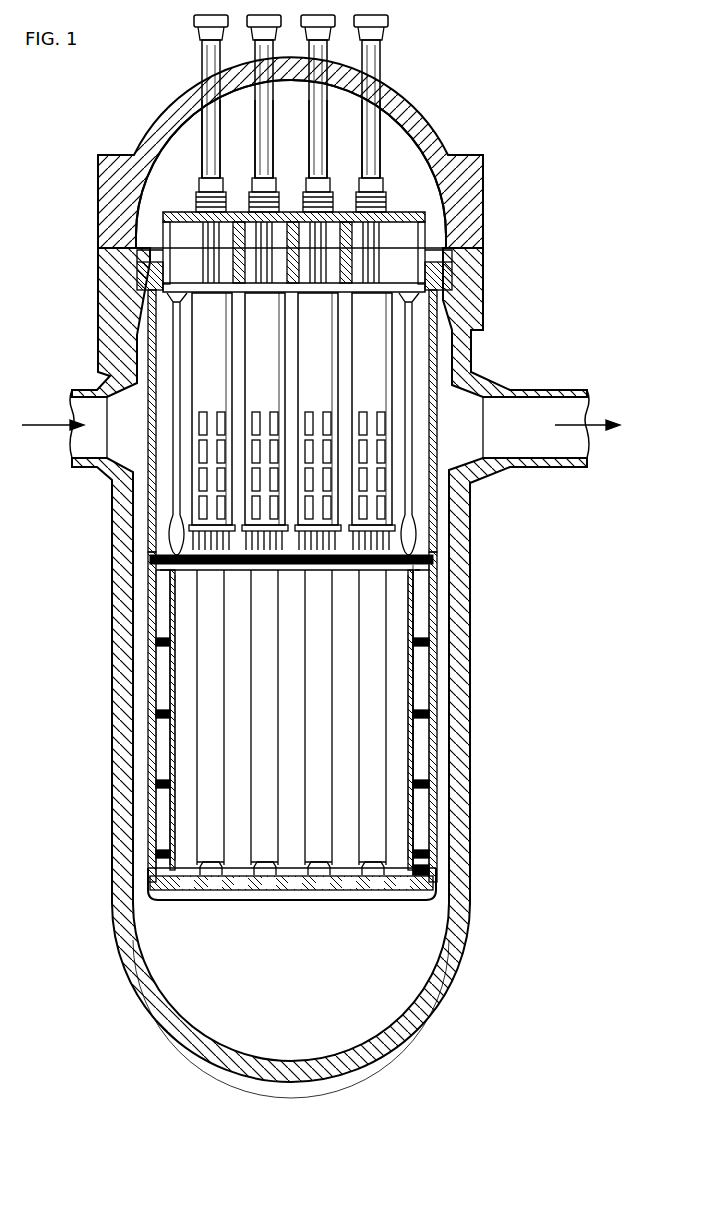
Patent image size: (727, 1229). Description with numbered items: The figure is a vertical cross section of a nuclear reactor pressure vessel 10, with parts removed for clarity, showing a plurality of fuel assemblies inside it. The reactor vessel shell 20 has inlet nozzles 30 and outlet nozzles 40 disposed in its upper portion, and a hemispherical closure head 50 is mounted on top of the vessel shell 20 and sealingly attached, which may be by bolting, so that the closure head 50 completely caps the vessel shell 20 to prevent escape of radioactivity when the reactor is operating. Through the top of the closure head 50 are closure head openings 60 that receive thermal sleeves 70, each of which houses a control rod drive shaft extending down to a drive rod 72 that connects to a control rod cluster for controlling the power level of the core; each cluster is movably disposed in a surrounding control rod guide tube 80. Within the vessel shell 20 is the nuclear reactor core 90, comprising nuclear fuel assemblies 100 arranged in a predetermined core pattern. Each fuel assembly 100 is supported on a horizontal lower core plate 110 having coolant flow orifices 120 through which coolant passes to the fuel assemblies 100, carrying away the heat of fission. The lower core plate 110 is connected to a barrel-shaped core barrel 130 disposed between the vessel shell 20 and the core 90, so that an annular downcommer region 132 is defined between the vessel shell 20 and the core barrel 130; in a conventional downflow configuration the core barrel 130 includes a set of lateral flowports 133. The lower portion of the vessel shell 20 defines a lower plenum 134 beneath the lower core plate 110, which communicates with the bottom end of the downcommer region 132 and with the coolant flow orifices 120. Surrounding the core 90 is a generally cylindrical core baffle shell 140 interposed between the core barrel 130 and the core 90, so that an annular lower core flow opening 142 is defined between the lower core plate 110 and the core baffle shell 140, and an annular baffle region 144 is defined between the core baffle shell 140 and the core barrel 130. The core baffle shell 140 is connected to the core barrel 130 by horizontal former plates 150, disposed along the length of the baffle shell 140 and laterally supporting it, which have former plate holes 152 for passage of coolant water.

The nuclear reactor pressure vessel 10 is at (408, 70).
The reactor vessel shell 20 is at (471, 856).
The inlet nozzles 30 is at (78, 388).
The outlet nozzles 40 is at (538, 390).
The hemispherical closure head 50 is at (410, 120).
The closure head openings 60 is at (203, 92).
The thermal sleeves 70 is at (203, 62).
The drive rod 72 is at (385, 214).
The control rod guide tube 80 is at (202, 342).
The nuclear reactor core 90 is at (420, 610).
The nuclear fuel assemblies 100 is at (320, 697).
The lower core plate 110 is at (200, 900).
The coolant flow orifices 120 is at (216, 893).
The core barrel 130 is at (432, 632).
The annular downcommer region 132 is at (146, 518).
The lateral flowports 133 is at (152, 614).
The lower plenum 134 is at (412, 985).
The core baffle shell 140 is at (415, 676).
The annular lower core flow opening 142 is at (422, 873).
The annular baffle region 144 is at (160, 768).
The former plates 150 is at (158, 640).
The former plate holes 152 is at (158, 714).